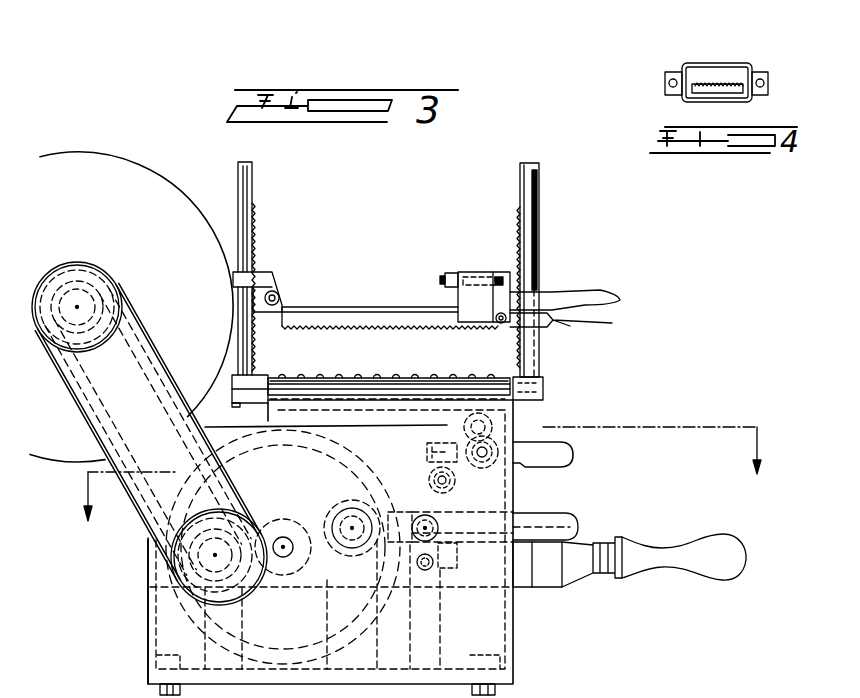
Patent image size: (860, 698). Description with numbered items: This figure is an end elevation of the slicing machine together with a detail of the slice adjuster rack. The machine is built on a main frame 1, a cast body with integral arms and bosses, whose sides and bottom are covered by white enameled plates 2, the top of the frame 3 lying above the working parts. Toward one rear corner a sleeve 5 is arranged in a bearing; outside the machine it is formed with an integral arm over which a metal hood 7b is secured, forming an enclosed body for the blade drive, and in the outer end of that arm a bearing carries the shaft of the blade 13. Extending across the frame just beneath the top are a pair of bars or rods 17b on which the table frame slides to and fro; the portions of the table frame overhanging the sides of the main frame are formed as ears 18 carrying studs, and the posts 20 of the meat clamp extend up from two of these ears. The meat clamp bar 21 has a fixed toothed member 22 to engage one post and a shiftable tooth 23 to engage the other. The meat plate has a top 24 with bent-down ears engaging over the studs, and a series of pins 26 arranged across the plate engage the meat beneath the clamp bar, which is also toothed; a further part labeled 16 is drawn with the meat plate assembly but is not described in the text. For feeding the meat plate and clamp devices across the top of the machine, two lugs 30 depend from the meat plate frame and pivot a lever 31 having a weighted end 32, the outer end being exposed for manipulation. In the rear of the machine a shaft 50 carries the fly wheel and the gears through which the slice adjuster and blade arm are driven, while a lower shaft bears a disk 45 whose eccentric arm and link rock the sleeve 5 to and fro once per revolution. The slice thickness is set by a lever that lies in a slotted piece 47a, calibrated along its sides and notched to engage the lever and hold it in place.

In FIG. 3, the main frame 1 is at (520, 608).
In FIG. 3, the white enameled plates 2 is at (515, 627).
In FIG. 3, the top of the frame 3 is at (517, 412).
In FIG. 3, the sleeve 5 is at (148, 578).
In FIG. 3, the metal hood 7b is at (137, 483).
In FIG. 3, the blade 13 is at (133, 193).
In FIG. 3, the feed bar 16 is at (389, 365).
In FIG. 3, the bars or rods 17b is at (330, 413).
In FIG. 3, the ears 18 is at (252, 388).
In FIG. 3, the posts 20 is at (254, 226).
In FIG. 3, the meat clamp bar 21 is at (346, 318).
In FIG. 3, the fixed toothed member 22 is at (285, 303).
In FIG. 3, the shiftable tooth 23 is at (519, 283).
In FIG. 3, the top 24 is at (425, 367).
In FIG. 3, the pins 26 is at (338, 378).
In FIG. 3, the lugs 30 is at (463, 415).
In FIG. 3, the lever 31 is at (560, 465).
In FIG. 3, the weighted end 32 is at (426, 452).
In FIG. 3, the disk 45 is at (458, 488).
In FIG. 3, the shaft 50 is at (283, 547).
In FIG. 4, the slotted piece 47a is at (714, 67).